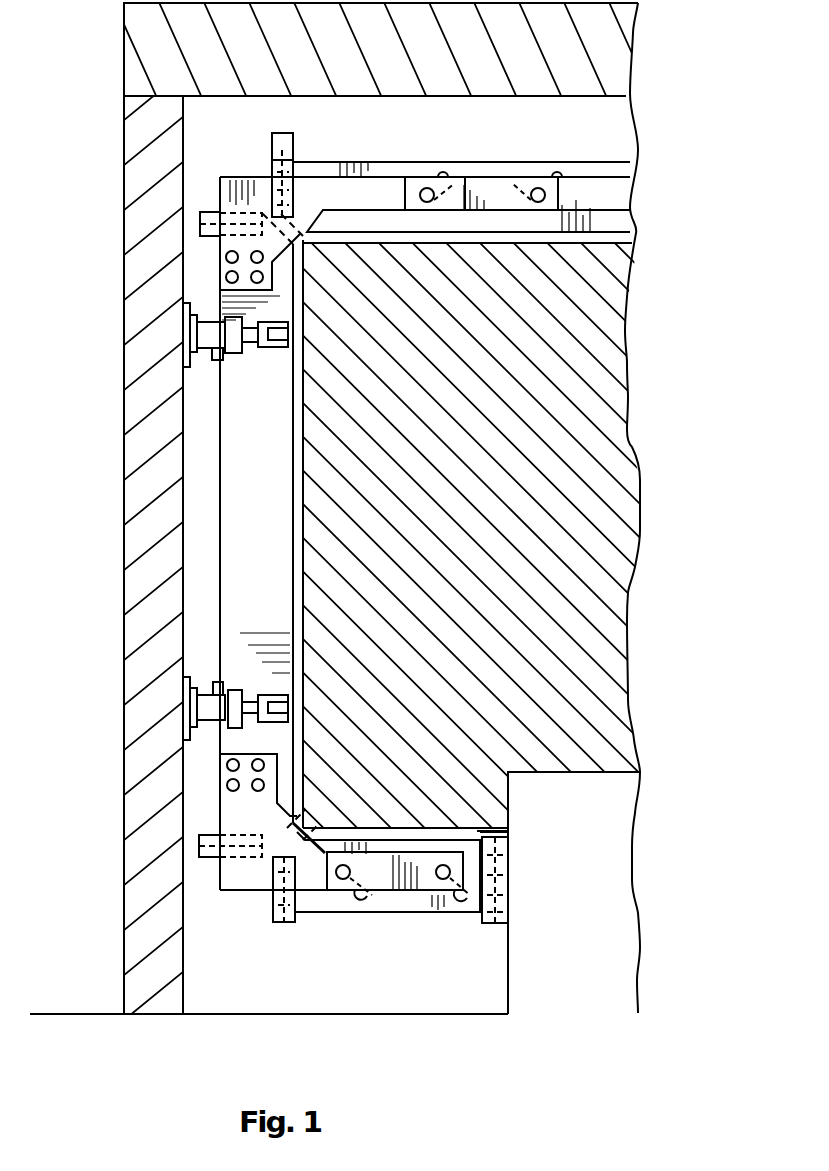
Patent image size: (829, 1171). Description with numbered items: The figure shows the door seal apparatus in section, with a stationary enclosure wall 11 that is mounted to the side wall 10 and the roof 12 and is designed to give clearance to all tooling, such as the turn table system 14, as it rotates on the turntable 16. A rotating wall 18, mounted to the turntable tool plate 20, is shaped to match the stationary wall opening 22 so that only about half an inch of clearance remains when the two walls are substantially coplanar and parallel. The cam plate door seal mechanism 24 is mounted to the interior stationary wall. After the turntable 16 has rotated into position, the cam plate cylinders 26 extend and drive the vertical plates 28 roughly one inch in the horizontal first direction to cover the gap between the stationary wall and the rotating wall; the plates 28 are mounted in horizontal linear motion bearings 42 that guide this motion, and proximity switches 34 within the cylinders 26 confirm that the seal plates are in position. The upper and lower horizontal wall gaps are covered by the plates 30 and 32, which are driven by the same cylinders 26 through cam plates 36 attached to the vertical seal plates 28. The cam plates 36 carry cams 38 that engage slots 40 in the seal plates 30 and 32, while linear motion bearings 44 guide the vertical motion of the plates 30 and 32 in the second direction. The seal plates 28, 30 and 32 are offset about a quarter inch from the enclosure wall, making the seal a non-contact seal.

The side wall 10 is at (135, 183).
The stationary enclosure wall 11 is at (200, 136).
The roof 12 is at (138, 45).
The turn table system 14 is at (414, 568).
The turntable 16 is at (623, 803).
The rotating wall 18 is at (613, 280).
The turntable tool plate 20 is at (597, 765).
The stationary wall opening 22 is at (302, 250).
The cam plate door seal mechanism 24 is at (175, 533).
The cam plate cylinders 26 is at (186, 340).
The vertical plates 28 is at (228, 515).
The upper seal plate 30 is at (403, 220).
The lower seal plate 32 is at (398, 847).
The proximity switches 34 is at (222, 358).
The cam plates 36 is at (302, 237).
The cams 38 is at (547, 187).
The slots 40 is at (550, 167).
The horizontal linear motion bearings 42 is at (200, 242).
The linear motion bearings 44 is at (287, 145).